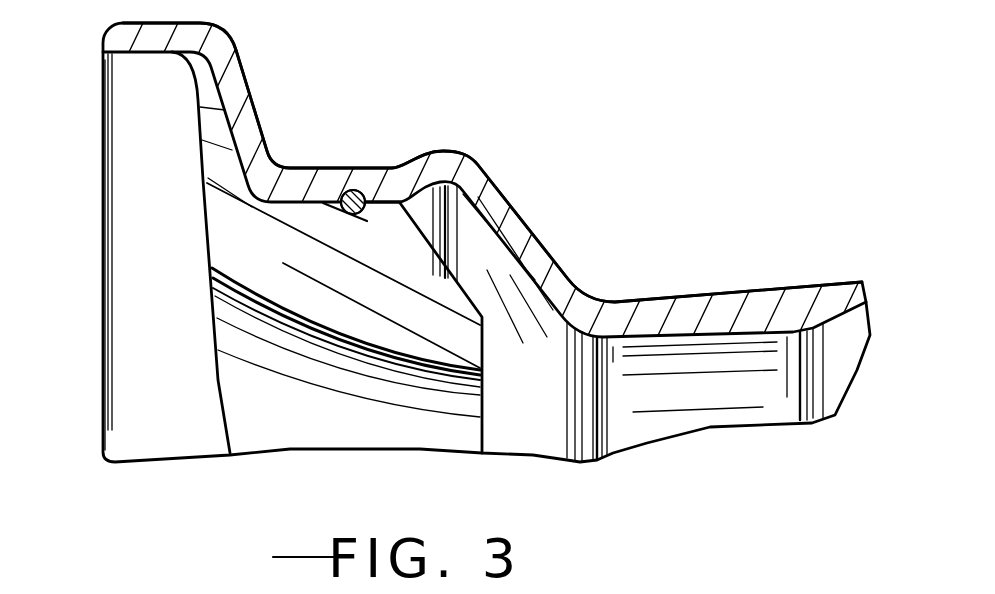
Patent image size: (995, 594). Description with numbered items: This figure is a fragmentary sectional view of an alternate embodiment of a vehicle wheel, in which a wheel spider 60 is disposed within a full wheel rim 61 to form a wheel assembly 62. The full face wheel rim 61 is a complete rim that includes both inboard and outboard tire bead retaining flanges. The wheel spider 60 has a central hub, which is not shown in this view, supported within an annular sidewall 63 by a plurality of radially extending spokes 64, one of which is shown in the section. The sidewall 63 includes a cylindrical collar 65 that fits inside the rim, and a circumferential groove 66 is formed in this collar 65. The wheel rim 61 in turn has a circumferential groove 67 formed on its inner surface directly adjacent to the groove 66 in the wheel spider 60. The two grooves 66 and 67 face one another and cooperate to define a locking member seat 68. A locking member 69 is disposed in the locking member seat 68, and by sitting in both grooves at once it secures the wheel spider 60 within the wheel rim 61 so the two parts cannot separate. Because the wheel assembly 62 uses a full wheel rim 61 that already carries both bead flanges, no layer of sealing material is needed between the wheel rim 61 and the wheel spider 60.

The wheel spider 60 is at (322, 442).
The full wheel rim 61 is at (538, 248).
The wheel assembly 62 is at (522, 121).
The annular sidewall 63 is at (220, 218).
The radially extending spoke 64 is at (230, 402).
The cylindrical collar 65 is at (300, 205).
The circumferential groove 66 is at (367, 221).
The circumferential groove 67 is at (343, 192).
The locking member seat 68 is at (366, 203).
The locking member 69 is at (362, 192).